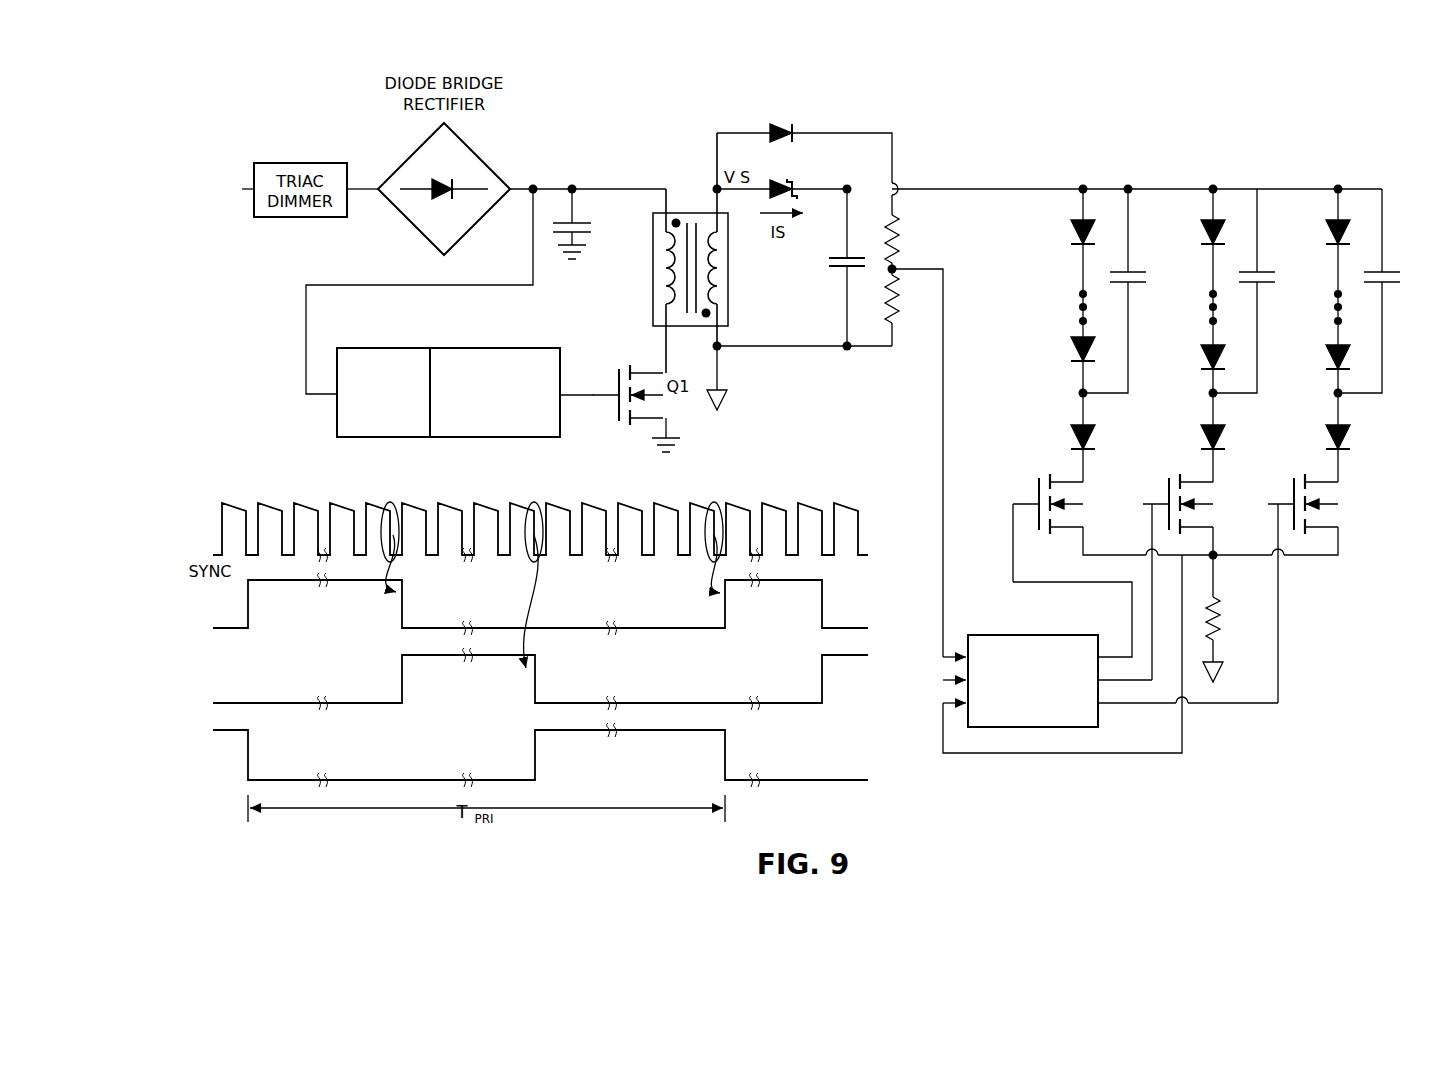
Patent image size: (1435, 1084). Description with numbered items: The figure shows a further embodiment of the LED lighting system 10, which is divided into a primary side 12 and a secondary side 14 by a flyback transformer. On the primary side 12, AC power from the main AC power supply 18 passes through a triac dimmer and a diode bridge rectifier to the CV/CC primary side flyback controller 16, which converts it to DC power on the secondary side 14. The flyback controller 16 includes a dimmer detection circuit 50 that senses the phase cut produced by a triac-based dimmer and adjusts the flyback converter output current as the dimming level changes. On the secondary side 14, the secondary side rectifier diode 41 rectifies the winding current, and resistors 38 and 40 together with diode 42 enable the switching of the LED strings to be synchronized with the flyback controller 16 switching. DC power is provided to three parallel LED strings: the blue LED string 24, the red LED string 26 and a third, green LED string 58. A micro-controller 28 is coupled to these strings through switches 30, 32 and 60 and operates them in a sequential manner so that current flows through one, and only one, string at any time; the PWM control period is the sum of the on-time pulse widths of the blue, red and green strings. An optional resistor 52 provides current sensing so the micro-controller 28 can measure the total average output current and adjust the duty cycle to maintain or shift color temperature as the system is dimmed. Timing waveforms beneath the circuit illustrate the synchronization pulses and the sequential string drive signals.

The LED lighting system 10 is at (888, 98).
The primary side 12 is at (559, 158).
The secondary side 14 is at (862, 372).
The CV/CC primary side flyback controller 16 is at (465, 437).
The main AC power supply 18 is at (225, 160).
The blue LED string 24 is at (1083, 183).
The red LED string 26 is at (1213, 183).
The micro-controller 28 is at (997, 635).
The switch 30 is at (1039, 490).
The switch 32 is at (1213, 512).
The resistor R1 38 is at (902, 236).
The resistor R2 40 is at (893, 318).
The secondary side rectifier diode D1 41 is at (797, 186).
The diode D2 42 is at (797, 132).
The dimmer detection circuit 50 is at (337, 420).
The resistor R3 52 is at (1218, 637).
The green LED string 58 is at (1338, 183).
The switch 60 is at (1338, 512).